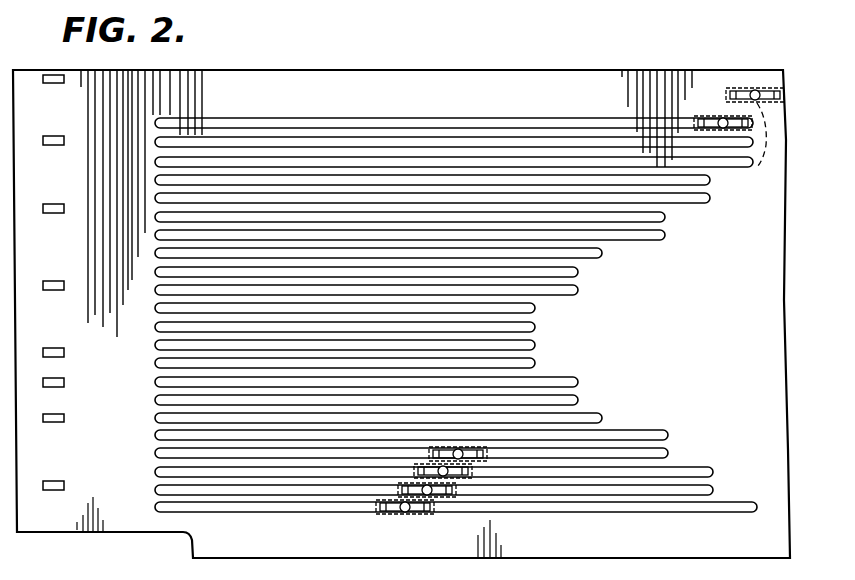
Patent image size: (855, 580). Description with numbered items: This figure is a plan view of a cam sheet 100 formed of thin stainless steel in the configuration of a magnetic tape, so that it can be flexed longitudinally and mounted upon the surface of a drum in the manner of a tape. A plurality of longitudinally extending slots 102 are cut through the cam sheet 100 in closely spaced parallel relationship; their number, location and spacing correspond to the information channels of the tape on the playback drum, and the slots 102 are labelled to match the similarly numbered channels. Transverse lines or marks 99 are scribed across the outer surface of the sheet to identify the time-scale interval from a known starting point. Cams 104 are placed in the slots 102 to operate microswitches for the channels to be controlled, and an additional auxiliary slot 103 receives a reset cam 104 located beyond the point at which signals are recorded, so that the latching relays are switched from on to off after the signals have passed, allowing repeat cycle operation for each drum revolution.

The transverse lines or marks 99 is at (672, 93).
The cam sheet 100 is at (125, 517).
The longitudinally extending slots 102 is at (523, 126).
The auxiliary slot 103 is at (753, 146).
The cam 104 is at (406, 516).